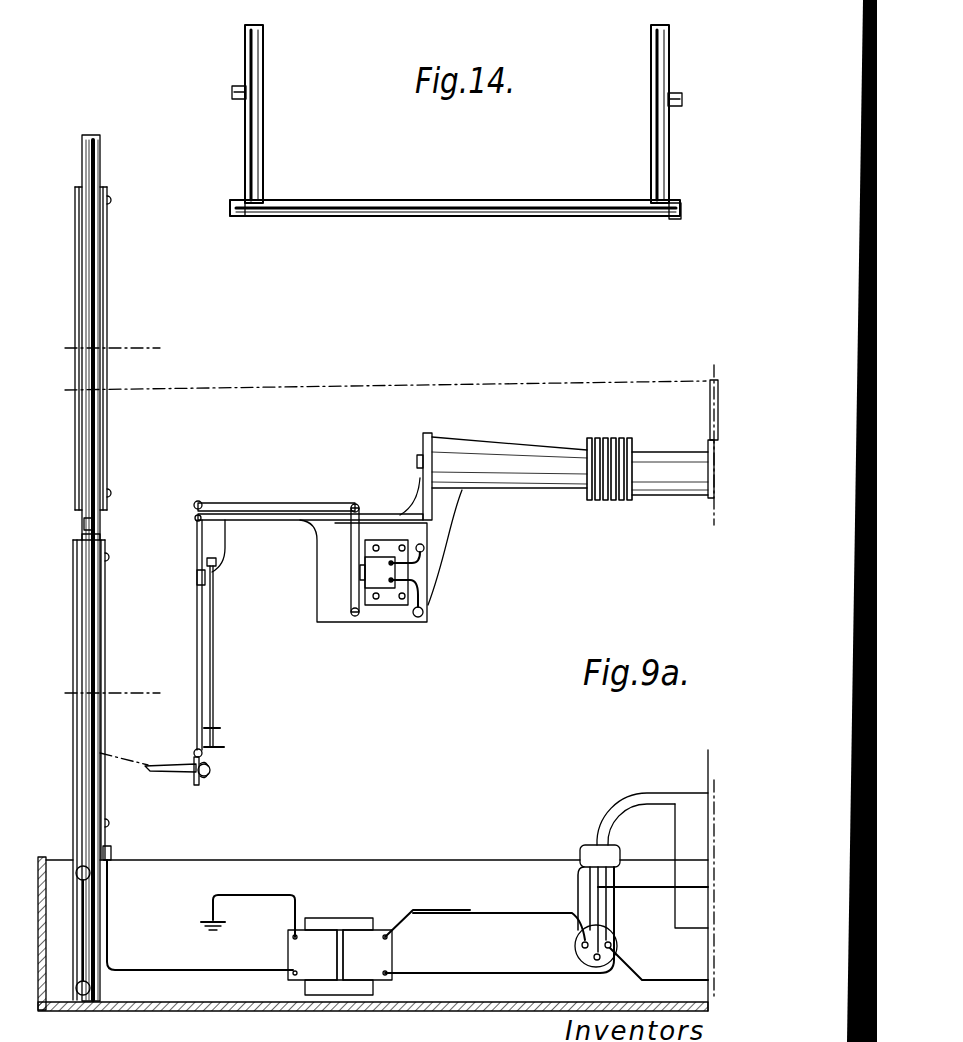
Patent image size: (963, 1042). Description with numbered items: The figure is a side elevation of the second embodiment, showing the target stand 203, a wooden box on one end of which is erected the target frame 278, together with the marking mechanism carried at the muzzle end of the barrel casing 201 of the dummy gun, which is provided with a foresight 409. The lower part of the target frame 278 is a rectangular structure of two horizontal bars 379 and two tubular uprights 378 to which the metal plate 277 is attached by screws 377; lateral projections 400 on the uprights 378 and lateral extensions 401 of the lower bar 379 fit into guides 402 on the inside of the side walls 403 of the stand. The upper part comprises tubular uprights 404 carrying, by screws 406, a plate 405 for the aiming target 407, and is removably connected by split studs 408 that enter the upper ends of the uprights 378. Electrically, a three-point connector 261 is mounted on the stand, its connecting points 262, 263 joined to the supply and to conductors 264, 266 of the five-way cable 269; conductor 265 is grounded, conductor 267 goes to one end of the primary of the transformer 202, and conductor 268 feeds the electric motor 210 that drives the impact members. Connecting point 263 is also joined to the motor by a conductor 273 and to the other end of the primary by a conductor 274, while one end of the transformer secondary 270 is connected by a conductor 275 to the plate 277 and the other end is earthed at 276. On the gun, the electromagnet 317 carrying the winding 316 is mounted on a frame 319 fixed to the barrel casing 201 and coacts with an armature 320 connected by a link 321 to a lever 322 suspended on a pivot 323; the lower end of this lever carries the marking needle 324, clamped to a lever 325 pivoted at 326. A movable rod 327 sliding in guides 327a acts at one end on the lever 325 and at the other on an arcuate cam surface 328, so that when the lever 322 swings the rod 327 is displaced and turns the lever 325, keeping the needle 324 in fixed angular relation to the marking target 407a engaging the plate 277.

In FIG. 9A, the barrel casing 201 is at (656, 452).
In FIG. 9A, the transformer 202 is at (345, 918).
In FIG. 9A, the target stand 203 is at (470, 853).
In FIG. 9A, the electric motor 210 is at (697, 808).
In FIG. 9A, the three-point connector 261 is at (590, 966).
In FIG. 9A, the connecting point 262 is at (582, 945).
In FIG. 9A, the connecting point 263 is at (612, 945).
In FIG. 9A, the conductor 264 is at (580, 880).
In FIG. 9A, the conductor 265 is at (577, 900).
In FIG. 9A, the conductor 266 is at (628, 912).
In FIG. 9A, the conductor 267 is at (470, 912).
In FIG. 9A, the conductor 268 is at (642, 886).
In FIG. 9A, the five-way cable 269 is at (640, 792).
In FIG. 9A, the transformer secondary 270 is at (293, 940).
In FIG. 9A, the conductor 273 is at (662, 981).
In FIG. 9A, the conductor 274 is at (478, 972).
In FIG. 9A, the conductor 275 is at (258, 972).
In FIG. 9A, the earth connection 276 is at (216, 935).
In FIG. 9A, the metal plate 277 is at (101, 800).
In FIG. 9A, the target frame 278 is at (70, 797).
In FIG. 9A, the electromagnet winding 316 is at (388, 557).
In FIG. 9A, the electromagnet 317 is at (392, 600).
In FIG. 9A, the frame 319 is at (337, 622).
In FIG. 9A, the armature 320 is at (351, 548).
In FIG. 9A, the link 321 is at (262, 503).
In FIG. 9A, the lever 322 is at (202, 663).
In FIG. 9A, the pivot 323 is at (194, 512).
In FIG. 9A, the marking needle 324 is at (170, 771).
In FIG. 9A, the lever 325 is at (195, 752).
In FIG. 9A, the pivot 326 is at (210, 766).
In FIG. 9A, the movable rod 327 is at (214, 618).
In FIG. 9A, the guides 327a is at (206, 585).
In FIG. 9A, the arcuate cam surface 328 is at (220, 568).
In FIG. 9A, the screws 377 is at (109, 560).
In FIG. 14, the tubular uprights 378 is at (263, 142).
In FIG. 9A, the tubular uprights 378 is at (90, 652).
In FIG. 14, the horizontal bars 379 is at (441, 200).
In FIG. 9A, the horizontal bars 379 is at (100, 540).
In FIG. 14, the lateral projections 400 is at (239, 86).
In FIG. 9A, the lateral projections 400 is at (90, 874).
In FIG. 14, the lateral extensions 401 is at (233, 200).
In FIG. 9A, the lateral extensions 401 is at (90, 988).
In FIG. 9A, the guides 402 is at (86, 930).
In FIG. 9A, the side walls 403 is at (355, 860).
In FIG. 9A, the tubular uprights 404 is at (93, 333).
In FIG. 9A, the plate 405 is at (100, 290).
In FIG. 9A, the screws 406 is at (110, 202).
In FIG. 9A, the aiming target 407 is at (103, 418).
In FIG. 9A, the marking target 407a is at (103, 735).
In FIG. 9A, the split studs 408 is at (100, 525).
In FIG. 9A, the foresight 409 is at (710, 380).